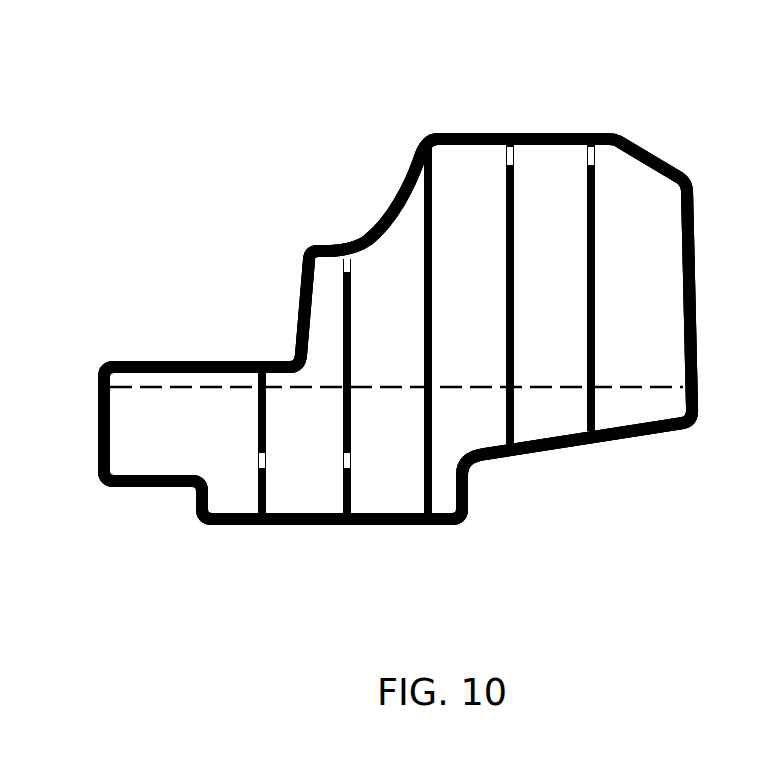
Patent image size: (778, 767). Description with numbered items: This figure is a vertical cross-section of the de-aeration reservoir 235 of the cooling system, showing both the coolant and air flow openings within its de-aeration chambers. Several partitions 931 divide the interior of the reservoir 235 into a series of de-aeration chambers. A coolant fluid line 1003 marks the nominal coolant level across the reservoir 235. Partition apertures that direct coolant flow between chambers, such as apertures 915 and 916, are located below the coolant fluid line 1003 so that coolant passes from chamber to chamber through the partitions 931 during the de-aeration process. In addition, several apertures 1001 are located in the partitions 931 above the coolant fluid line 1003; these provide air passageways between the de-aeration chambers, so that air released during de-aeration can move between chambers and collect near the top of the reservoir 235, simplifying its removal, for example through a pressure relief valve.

The reservoir 235 is at (398, 290).
The partitions 931 is at (258, 408).
The partition apertures 1001 is at (344, 262).
The coolant fluid line 1003 is at (142, 388).
The aperture 915 is at (343, 462).
The aperture 916 is at (258, 462).